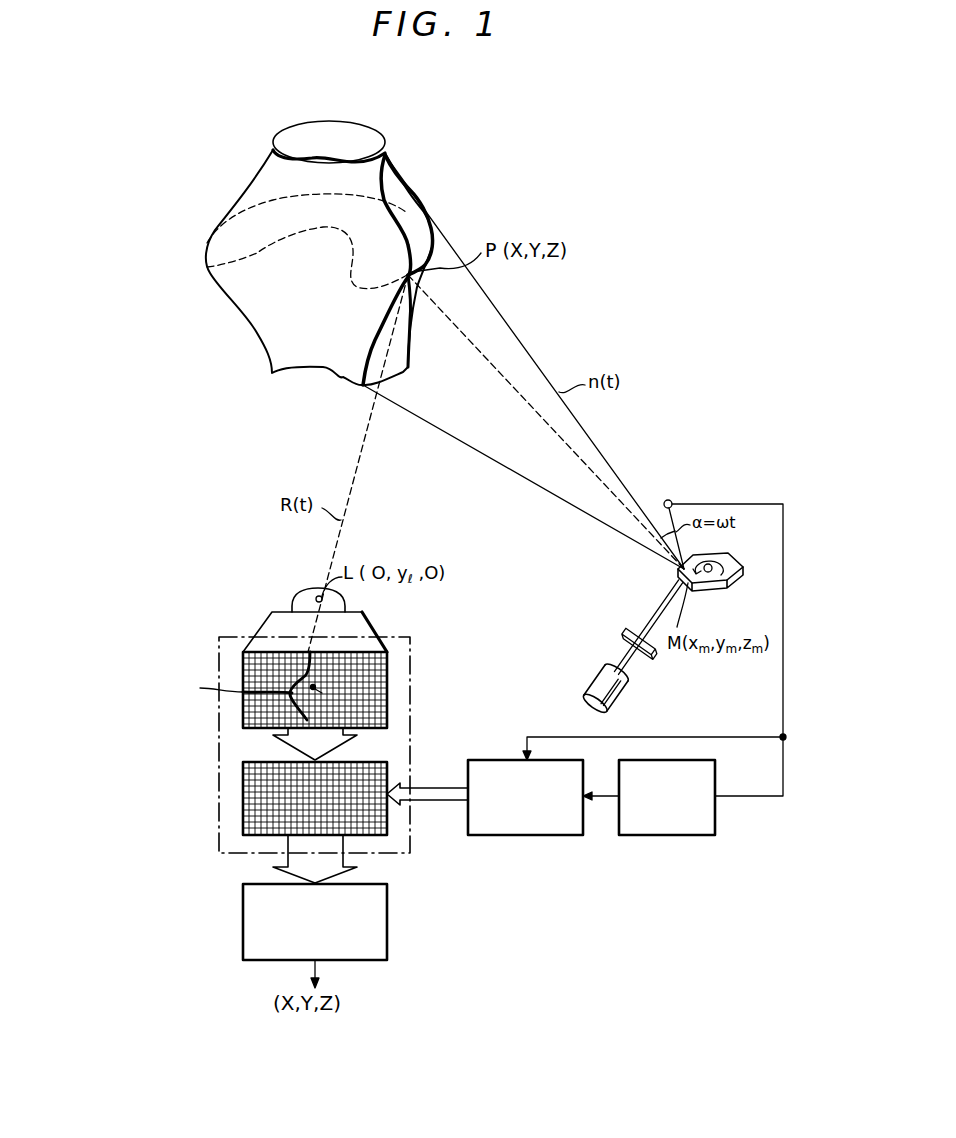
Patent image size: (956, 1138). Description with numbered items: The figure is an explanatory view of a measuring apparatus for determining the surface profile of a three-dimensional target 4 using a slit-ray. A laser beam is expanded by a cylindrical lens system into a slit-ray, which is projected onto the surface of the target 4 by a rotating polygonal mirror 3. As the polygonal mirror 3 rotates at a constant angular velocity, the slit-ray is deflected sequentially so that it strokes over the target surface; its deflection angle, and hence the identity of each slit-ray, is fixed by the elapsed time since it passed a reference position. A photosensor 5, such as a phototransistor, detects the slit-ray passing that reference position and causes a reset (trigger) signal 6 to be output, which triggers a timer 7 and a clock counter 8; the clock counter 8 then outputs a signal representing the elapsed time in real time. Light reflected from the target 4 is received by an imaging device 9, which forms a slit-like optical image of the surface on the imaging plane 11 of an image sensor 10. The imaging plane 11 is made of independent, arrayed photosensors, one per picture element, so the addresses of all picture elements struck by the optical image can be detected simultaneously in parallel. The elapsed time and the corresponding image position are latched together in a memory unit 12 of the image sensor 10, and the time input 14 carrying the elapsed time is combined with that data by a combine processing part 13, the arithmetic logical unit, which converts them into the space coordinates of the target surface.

The polygonal mirror 3 is at (717, 587).
The target 4 is at (256, 328).
The photosensor 5 is at (676, 522).
The reset (trigger) signal 6 is at (783, 703).
The timer 7 is at (662, 837).
The clock counter 8 is at (525, 837).
The imaging device 9 is at (356, 622).
The image sensor 10 is at (413, 668).
The imaging plane 11 is at (388, 700).
The memory unit 12 is at (243, 808).
The combine processing part 13 is at (243, 923).
The time signal input 14 is at (428, 803).